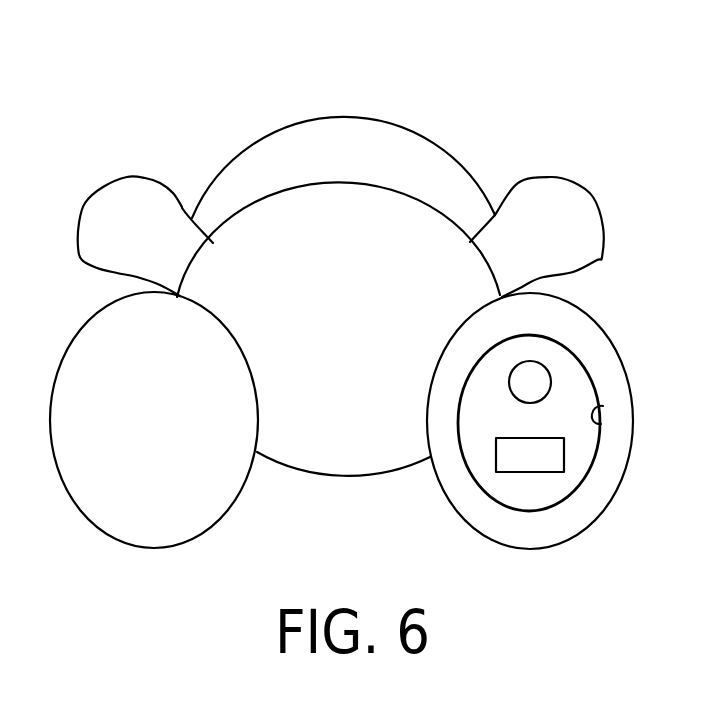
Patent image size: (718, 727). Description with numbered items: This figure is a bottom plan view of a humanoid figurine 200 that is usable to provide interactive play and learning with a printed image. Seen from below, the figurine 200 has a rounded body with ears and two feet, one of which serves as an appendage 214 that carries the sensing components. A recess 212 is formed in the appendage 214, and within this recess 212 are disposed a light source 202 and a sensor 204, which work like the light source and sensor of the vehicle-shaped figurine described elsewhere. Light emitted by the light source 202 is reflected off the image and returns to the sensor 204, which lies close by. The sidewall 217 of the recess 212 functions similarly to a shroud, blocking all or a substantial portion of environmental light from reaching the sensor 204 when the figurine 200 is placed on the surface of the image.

The figurine 200 is at (402, 128).
The appendage 214 is at (597, 323).
The recess 212 is at (532, 493).
The light source 202 is at (551, 372).
The sidewall 217 is at (603, 406).
The sensor 204 is at (564, 462).